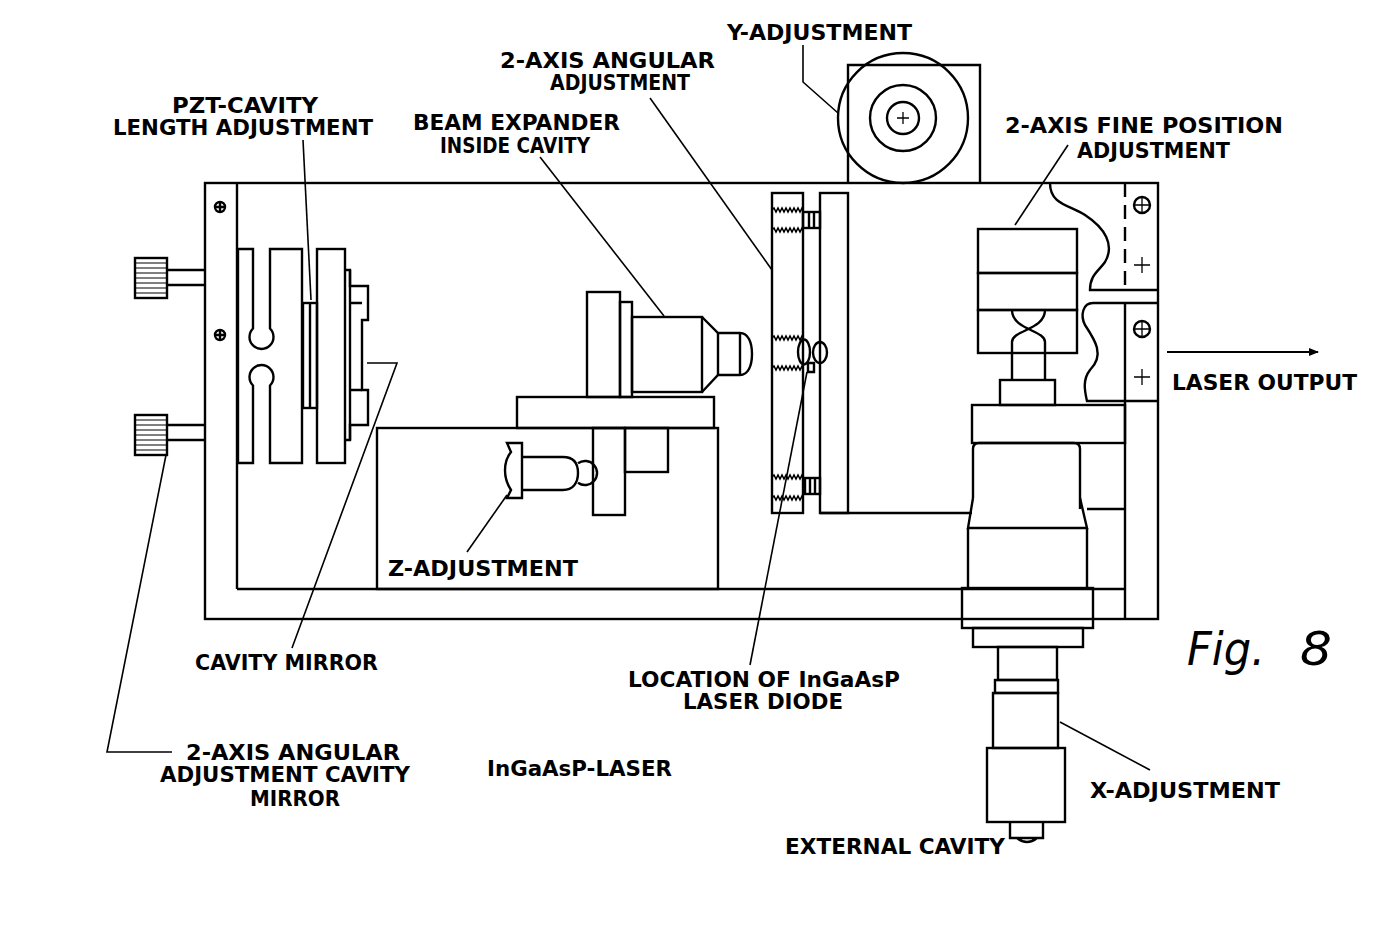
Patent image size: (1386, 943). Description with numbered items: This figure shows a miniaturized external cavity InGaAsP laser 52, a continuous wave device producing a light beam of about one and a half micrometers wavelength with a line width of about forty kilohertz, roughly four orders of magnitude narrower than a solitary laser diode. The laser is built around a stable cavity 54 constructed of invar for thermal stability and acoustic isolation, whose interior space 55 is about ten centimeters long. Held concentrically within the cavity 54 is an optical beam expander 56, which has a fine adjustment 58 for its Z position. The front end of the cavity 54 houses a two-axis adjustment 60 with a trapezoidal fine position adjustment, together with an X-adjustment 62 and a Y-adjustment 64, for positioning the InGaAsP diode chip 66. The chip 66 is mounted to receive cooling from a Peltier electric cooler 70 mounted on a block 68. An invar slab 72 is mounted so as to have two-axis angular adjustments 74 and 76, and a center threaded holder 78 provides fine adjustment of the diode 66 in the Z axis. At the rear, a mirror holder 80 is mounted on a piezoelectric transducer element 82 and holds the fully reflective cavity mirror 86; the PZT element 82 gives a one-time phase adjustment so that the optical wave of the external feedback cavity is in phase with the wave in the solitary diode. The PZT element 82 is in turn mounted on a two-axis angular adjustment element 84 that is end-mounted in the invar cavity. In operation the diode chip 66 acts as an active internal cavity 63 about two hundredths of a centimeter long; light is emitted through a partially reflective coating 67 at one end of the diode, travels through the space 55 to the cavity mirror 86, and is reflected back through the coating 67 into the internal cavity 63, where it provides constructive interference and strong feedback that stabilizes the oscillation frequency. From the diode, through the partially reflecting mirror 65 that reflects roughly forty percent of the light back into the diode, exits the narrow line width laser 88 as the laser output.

The external cavity InGaAsP laser 52 is at (1095, 63).
The stable cavity 54 is at (510, 621).
The space of passive external cavity 55 is at (513, 324).
The optical beam expander 56 is at (684, 317).
The fine adjustment for Z position 58 is at (538, 490).
The two-axis adjustment 60 is at (867, 513).
The X-adjustment 62 is at (1058, 686).
The active internal cavity 63 is at (810, 340).
The Y-adjustment 64 is at (933, 62).
The partially reflecting mirror 65 is at (832, 358).
The InGaAsP diode chip 66 is at (812, 366).
The partially reflective coating 67 is at (772, 347).
The block 68 is at (950, 266).
The Peltier electric cooler 70 is at (845, 243).
The invar slab 72 is at (803, 282).
The two-axis angular adjustment 74 is at (767, 220).
The two-axis angular adjustment 76 is at (772, 488).
The center threaded holder 78 is at (772, 366).
The mirror holder 80 is at (333, 249).
The piezoelectric transducer (PZT) element 82 is at (310, 413).
The two-axis angular adjustment element 84 is at (245, 249).
The cavity mirror 86 is at (363, 343).
The narrow line width laser 88 is at (1210, 352).